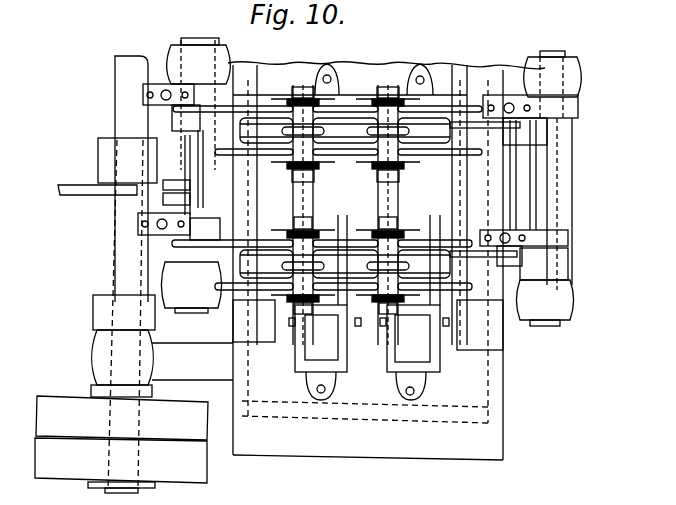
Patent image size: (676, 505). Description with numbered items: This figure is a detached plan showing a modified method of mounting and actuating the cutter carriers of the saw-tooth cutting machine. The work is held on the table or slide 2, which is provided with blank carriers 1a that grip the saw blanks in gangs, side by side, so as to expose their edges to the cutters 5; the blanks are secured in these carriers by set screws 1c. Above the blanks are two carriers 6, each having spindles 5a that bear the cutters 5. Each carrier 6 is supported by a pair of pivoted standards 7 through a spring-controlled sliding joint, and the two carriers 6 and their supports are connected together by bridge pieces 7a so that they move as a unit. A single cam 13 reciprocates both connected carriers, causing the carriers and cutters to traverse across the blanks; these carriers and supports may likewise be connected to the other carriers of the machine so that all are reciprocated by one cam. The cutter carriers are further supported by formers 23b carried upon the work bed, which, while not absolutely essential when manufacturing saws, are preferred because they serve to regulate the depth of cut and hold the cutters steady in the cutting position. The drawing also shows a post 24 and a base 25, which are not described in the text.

The table or slide 2 is at (386, 261).
The cutters 5 is at (380, 100).
The spindles 5a is at (292, 100).
The carriers 6 is at (178, 112).
The pivoted standards 7 is at (143, 96).
The bridge pieces 7a is at (185, 150).
The cam 13 is at (68, 190).
The post 24 is at (117, 78).
The base 25 is at (50, 405).
The blank carriers 1a is at (396, 382).
The set screws 1c is at (396, 346).
The formers 23b is at (262, 330).